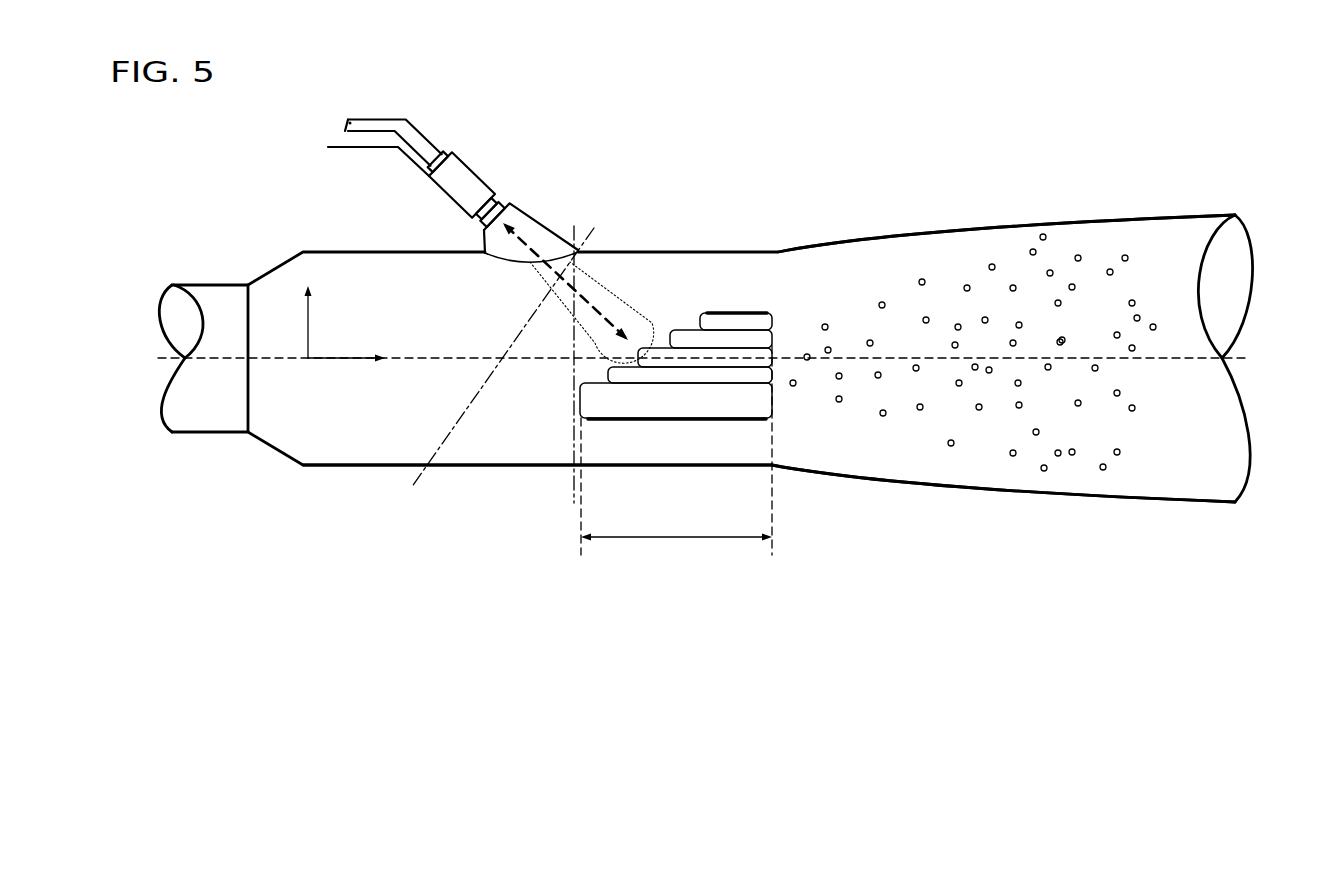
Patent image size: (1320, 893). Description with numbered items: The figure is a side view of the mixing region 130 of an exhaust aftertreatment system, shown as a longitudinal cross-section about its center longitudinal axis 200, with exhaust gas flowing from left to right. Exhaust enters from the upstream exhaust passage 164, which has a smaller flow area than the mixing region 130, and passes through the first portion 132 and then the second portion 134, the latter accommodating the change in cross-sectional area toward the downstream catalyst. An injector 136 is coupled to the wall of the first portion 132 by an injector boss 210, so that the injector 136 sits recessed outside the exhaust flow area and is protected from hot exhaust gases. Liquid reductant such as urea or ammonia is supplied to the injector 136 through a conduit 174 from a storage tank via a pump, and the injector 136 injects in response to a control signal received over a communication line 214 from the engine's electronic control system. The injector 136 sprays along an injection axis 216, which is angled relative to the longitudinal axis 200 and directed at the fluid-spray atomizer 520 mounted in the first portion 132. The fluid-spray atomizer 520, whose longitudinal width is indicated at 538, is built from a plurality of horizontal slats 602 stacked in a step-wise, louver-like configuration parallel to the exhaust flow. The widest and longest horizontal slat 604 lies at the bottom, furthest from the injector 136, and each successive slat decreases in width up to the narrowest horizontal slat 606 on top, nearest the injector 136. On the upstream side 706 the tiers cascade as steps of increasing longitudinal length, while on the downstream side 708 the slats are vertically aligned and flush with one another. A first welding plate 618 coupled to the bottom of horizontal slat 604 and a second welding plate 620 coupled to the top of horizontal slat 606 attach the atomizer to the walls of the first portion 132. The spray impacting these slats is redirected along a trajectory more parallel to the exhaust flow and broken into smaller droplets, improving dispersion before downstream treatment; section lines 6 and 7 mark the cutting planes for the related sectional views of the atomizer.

The mixing region 130 is at (296, 522).
The first portion 132 is at (483, 468).
The second portion 134 is at (937, 480).
The injector 136 is at (450, 183).
The exhaust passage 164 is at (192, 433).
The conduit 174 is at (410, 135).
The center longitudinal axis 200 is at (1240, 357).
The injector boss 210 is at (528, 238).
The communication line 214 is at (380, 150).
The injection axis 216 is at (583, 285).
The fluid-spray atomizer 520 is at (729, 268).
The longitudinal width 538 is at (676, 450).
The horizontal slats 602 is at (703, 357).
The horizontal slat 604 is at (697, 413).
The horizontal slat 606 is at (700, 318).
The first welding plate 618 is at (663, 420).
The second welding plate 620 is at (752, 312).
The upstream side 706 is at (546, 400).
The downstream side 708 is at (797, 423).
The section line 6 is at (575, 363).
The section line 7 is at (503, 358).